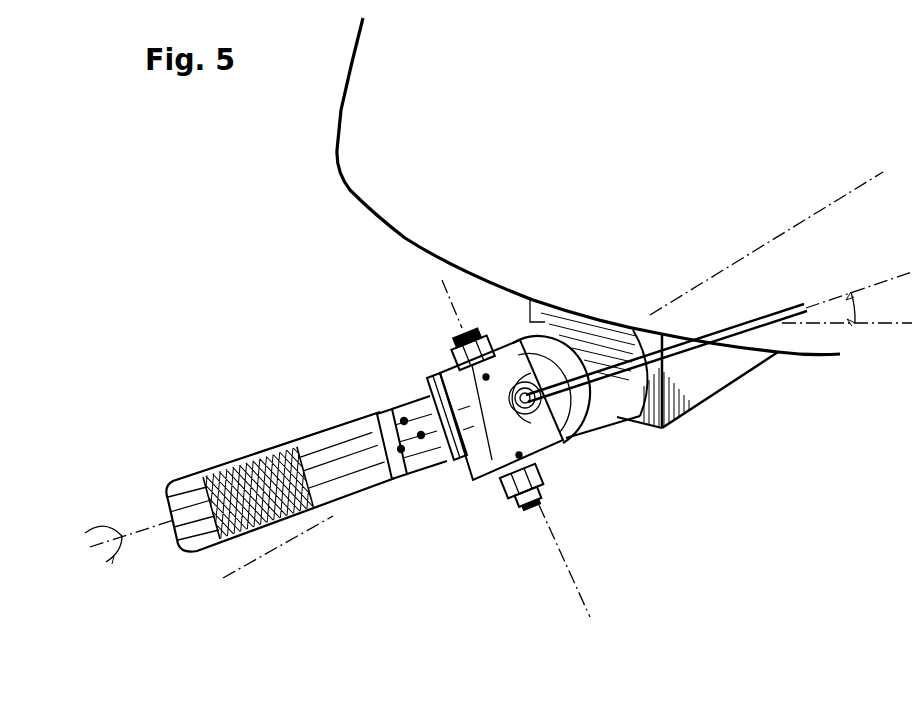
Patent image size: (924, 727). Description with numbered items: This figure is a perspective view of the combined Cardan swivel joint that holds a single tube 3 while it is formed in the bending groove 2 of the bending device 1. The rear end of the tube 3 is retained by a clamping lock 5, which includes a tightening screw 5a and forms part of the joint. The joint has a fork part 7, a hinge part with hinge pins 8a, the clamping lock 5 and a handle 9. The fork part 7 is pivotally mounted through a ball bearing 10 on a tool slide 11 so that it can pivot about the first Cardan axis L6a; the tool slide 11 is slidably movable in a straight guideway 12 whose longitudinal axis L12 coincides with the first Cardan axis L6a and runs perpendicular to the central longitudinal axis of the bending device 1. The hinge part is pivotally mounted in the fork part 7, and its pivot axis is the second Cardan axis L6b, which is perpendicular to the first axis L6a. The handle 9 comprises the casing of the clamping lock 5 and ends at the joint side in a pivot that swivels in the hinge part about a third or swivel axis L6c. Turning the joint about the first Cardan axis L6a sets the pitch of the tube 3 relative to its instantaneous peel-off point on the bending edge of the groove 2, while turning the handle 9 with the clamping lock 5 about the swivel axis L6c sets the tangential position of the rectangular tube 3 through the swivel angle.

The bending device 1 is at (352, 114).
The bending groove 2 is at (772, 308).
The tube 3 is at (627, 336).
The clamping lock 5 is at (400, 397).
The tightening screw 5a is at (393, 403).
The fork part 7 is at (548, 445).
The hinge pins 8a is at (450, 337).
The handle 9 is at (342, 450).
The ball bearing 10 is at (545, 355).
The tool slide 11 is at (612, 397).
The guideway 12 is at (727, 368).
The longitudinal axis of guideway L12 is at (698, 285).
The first Cardan axis L6a is at (238, 577).
The second Cardan axis L6b is at (563, 563).
The swivel axis L6c is at (128, 532).